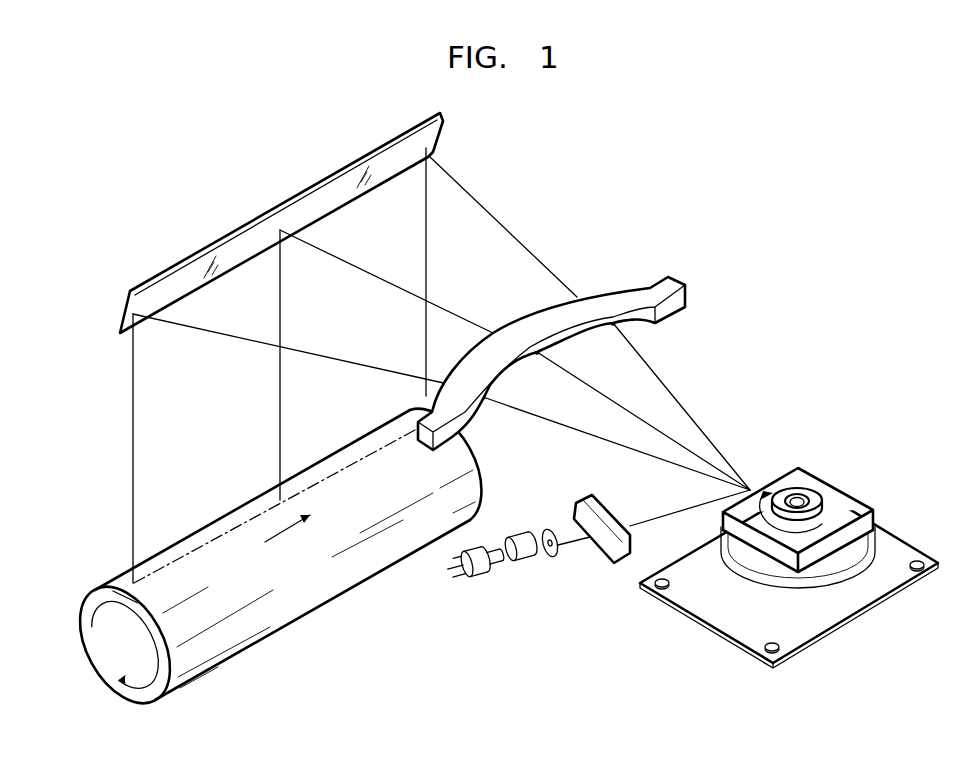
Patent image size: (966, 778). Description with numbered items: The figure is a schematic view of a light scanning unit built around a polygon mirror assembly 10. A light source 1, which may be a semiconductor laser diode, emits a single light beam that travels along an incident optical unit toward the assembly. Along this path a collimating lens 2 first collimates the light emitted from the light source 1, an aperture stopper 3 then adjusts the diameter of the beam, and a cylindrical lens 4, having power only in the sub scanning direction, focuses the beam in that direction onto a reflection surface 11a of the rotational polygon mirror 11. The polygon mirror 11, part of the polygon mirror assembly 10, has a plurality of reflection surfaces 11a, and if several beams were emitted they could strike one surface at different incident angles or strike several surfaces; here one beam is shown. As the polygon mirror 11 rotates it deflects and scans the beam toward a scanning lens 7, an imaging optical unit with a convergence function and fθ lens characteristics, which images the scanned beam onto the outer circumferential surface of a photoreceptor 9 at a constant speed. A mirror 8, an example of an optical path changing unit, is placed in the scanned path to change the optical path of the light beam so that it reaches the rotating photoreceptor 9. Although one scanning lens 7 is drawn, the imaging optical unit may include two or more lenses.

The light source 1 is at (477, 578).
The collimating lens 2 is at (515, 564).
The aperture stopper 3 is at (552, 558).
The cylindrical lens 4 is at (618, 563).
The scanning lens 7 is at (673, 285).
The mirror 8 is at (288, 201).
The photoreceptor 9 is at (237, 510).
The polygon mirror assembly 10 is at (790, 538).
The rotational polygon mirror 11 is at (880, 516).
The reflection surface 11a is at (746, 529).